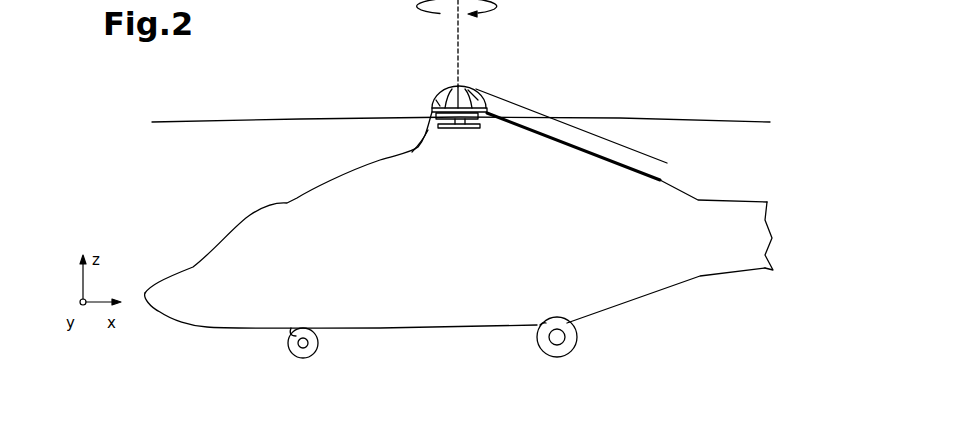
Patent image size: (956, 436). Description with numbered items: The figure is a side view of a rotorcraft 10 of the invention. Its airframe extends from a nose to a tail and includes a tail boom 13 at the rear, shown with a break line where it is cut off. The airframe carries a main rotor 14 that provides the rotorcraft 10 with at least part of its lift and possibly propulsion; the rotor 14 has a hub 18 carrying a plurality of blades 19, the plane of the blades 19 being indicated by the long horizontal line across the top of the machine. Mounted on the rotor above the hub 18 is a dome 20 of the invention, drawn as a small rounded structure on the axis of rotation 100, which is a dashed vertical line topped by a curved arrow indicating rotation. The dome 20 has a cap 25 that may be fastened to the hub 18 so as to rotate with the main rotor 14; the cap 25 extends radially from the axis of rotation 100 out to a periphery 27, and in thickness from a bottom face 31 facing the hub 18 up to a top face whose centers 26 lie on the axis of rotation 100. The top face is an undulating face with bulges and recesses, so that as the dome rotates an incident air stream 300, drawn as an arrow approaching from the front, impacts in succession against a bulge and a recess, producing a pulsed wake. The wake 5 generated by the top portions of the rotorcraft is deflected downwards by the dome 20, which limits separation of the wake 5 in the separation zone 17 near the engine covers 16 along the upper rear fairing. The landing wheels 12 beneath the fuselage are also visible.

The rotorcraft 10 is at (393, 366).
The landing gear 12 is at (487, 326).
The tail boom 13 is at (752, 272).
The main rotor 14 is at (703, 92).
The wake 5 is at (623, 153).
The engine covers 16 is at (527, 181).
The separation zone 17 is at (555, 154).
The hub 18 is at (446, 122).
The blades 19 is at (250, 123).
The dome 20 is at (428, 76).
The cap 25 is at (448, 87).
The centers 26 is at (464, 84).
The periphery 27 is at (408, 140).
The bottom face 31 is at (487, 122).
The axis of rotation 100 is at (460, 52).
The incident air stream 300 is at (355, 98).